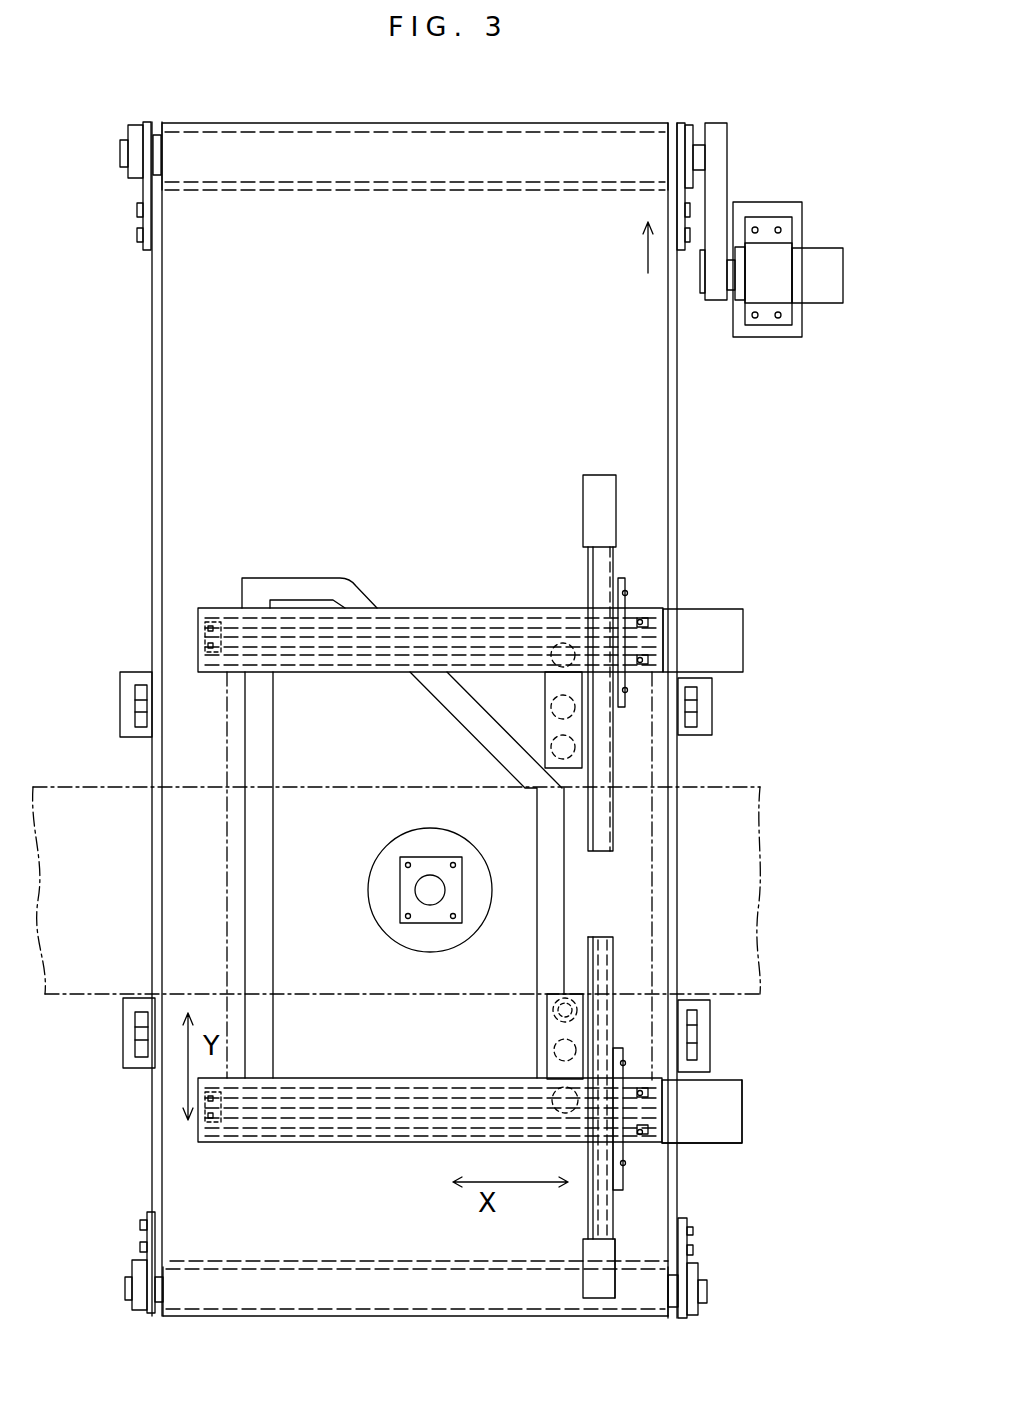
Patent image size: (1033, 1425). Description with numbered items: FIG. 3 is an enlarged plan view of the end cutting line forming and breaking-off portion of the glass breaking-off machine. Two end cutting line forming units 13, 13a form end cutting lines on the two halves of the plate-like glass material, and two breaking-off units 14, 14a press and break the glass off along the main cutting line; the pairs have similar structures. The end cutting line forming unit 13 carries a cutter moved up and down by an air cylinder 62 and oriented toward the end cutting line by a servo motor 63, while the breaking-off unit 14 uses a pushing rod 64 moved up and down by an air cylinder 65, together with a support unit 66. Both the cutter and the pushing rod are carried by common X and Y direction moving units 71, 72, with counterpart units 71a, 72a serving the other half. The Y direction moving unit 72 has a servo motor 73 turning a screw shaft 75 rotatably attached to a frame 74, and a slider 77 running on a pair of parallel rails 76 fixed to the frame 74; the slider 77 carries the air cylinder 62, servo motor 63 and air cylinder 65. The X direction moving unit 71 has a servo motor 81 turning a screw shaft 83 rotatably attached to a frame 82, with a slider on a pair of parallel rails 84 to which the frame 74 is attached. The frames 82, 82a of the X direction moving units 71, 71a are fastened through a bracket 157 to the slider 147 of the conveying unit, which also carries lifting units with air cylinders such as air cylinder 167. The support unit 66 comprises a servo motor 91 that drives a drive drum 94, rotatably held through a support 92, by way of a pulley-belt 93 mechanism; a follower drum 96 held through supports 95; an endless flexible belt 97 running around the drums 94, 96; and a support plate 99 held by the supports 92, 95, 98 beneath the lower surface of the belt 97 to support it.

The end cutting line forming unit 13 is at (518, 1220).
The breaking-off unit 14 is at (557, 1220).
The end cutting line forming unit 13a is at (489, 551).
The breaking-off unit 14a is at (543, 482).
The air cylinder 62 is at (555, 1050).
The servo motor 63 is at (562, 1113).
The pushing rod 64 is at (608, 1100).
The air cylinder 65 is at (553, 987).
The plate-like glass material support/cullet discharge unit 66 is at (326, 1318).
The X direction moving unit 71 is at (758, 1122).
The X direction moving unit 71a is at (758, 641).
The Y direction moving unit 72 is at (603, 1312).
The Y direction moving unit 72a is at (604, 462).
The servo motor 73 is at (607, 1280).
The frame 74 is at (613, 1228).
The screw shaft 75 is at (602, 1215).
The pair of parallel rails 76 is at (590, 1222).
The slider 77 is at (555, 1028).
The servo motor 81 is at (727, 1131).
The frame 82 is at (324, 1143).
The frame 82a is at (350, 578).
The screw shaft 83 is at (415, 1142).
The pair of parallel rails 84 is at (282, 1142).
The servo motor 91 is at (815, 255).
The support 92 is at (145, 122).
The belt 93 is at (724, 150).
The drive drum 94 is at (455, 128).
The supports 95 is at (152, 1313).
The follower drum 96 is at (230, 1316).
The endless flexible belt 97 is at (653, 470).
The supports 98 is at (130, 672).
The support plate 99 is at (152, 576).
The slider 147 is at (72, 787).
The bracket 157 is at (227, 1067).
The air cylinder 167 is at (420, 888).